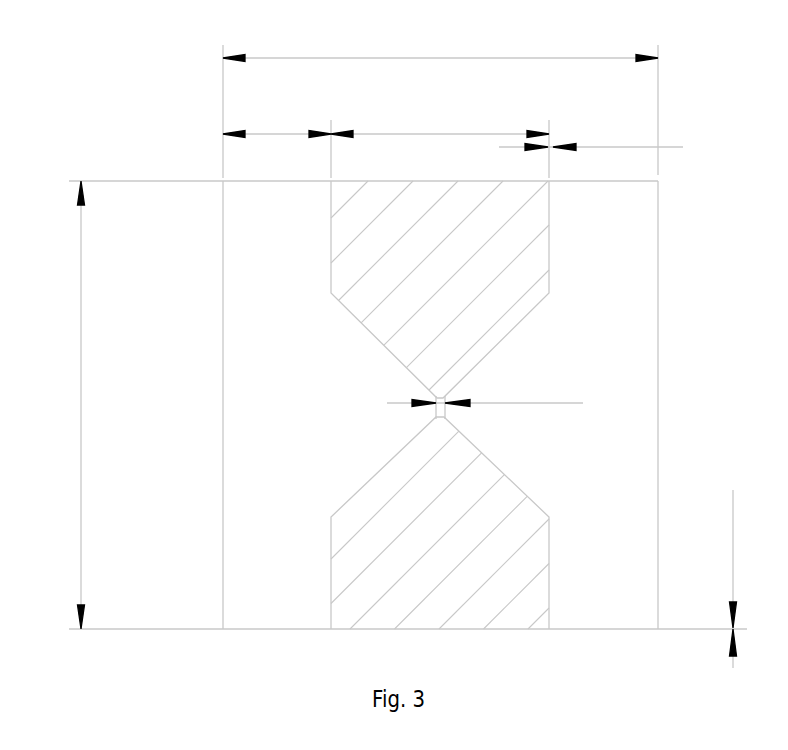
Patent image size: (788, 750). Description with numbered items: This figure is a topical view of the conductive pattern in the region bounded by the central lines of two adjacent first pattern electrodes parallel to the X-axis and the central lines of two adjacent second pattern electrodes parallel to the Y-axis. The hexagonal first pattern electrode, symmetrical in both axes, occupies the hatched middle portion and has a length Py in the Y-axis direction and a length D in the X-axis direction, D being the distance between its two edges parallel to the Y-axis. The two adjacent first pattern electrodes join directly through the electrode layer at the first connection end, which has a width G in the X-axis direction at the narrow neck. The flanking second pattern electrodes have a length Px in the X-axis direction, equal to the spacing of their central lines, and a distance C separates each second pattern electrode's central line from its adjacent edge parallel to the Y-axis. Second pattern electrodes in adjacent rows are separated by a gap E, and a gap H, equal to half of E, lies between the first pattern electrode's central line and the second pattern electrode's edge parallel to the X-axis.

The length of the second pattern electrode in the X-axis direction Px is at (440, 97).
The length of the first pattern electrode in the Y-axis direction Py is at (59, 405).
The distance between the central line of the second pattern electrode and its adjace C is at (277, 134).
The length of the first pattern electrode in the X-axis direction D is at (440, 134).
The gap between two adjacent second pattern electrodes in adjacent rows E is at (591, 128).
The width of the first connection end G is at (485, 389).
The gap between the central line of the first pattern electrode and the edge of the H is at (716, 579).